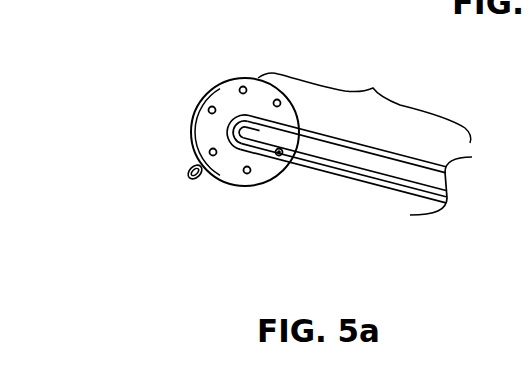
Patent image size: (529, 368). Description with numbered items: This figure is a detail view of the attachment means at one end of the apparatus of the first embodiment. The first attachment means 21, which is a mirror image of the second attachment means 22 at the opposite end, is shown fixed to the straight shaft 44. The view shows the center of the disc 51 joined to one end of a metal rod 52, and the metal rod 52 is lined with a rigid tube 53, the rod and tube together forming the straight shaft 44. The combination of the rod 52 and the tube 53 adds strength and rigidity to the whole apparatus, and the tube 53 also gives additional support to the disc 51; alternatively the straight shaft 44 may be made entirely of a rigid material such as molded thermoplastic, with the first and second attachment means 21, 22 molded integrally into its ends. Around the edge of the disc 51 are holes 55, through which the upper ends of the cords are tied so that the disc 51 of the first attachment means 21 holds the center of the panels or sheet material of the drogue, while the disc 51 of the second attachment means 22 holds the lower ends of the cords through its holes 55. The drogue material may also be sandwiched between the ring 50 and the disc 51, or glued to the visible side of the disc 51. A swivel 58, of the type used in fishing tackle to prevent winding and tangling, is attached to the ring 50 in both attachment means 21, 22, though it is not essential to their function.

The first attachment means 21 is at (211, 206).
The second attachment means 22 is at (293, 152).
The straight shaft 44 is at (365, 136).
The ring 50 is at (521, 106).
The disc 51 is at (207, 128).
The metal rod 52 is at (340, 160).
The rigid tube 53 is at (395, 153).
The holes 55 is at (239, 88).
The swivel 58 is at (187, 174).